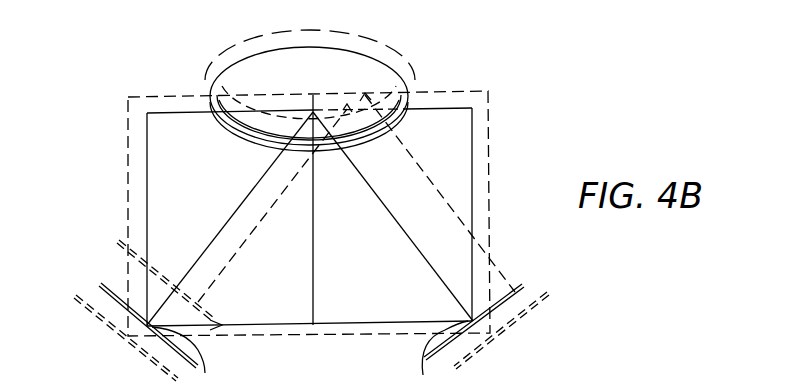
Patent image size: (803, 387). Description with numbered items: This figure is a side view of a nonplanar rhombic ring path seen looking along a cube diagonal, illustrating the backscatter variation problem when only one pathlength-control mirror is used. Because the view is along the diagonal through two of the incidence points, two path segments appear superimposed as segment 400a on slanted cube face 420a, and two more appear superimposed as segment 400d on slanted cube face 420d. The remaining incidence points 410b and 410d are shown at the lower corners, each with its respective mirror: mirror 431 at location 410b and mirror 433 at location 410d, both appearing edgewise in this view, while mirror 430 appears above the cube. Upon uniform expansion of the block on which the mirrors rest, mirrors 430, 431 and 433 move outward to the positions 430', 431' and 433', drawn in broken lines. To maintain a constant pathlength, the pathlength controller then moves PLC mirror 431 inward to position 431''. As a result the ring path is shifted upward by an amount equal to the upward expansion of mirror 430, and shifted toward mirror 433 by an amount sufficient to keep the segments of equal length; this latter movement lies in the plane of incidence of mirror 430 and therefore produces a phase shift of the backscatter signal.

The path segment 400a is at (230, 220).
The path segment 400d is at (406, 235).
The incidence point 410b is at (203, 357).
The incidence point 410d is at (423, 354).
The slanted cube face 420a is at (150, 127).
The slanted cube face 420d is at (462, 128).
The mirror 430 is at (335, 99).
The expanded mirror position 430' is at (320, 48).
The PLC mirror 431 is at (99, 184).
The expanded mirror position 431' is at (114, 338).
The inward-moved PLC mirror position 431'' is at (192, 280).
The mirror 433 is at (492, 308).
The expanded mirror position 433' is at (522, 330).